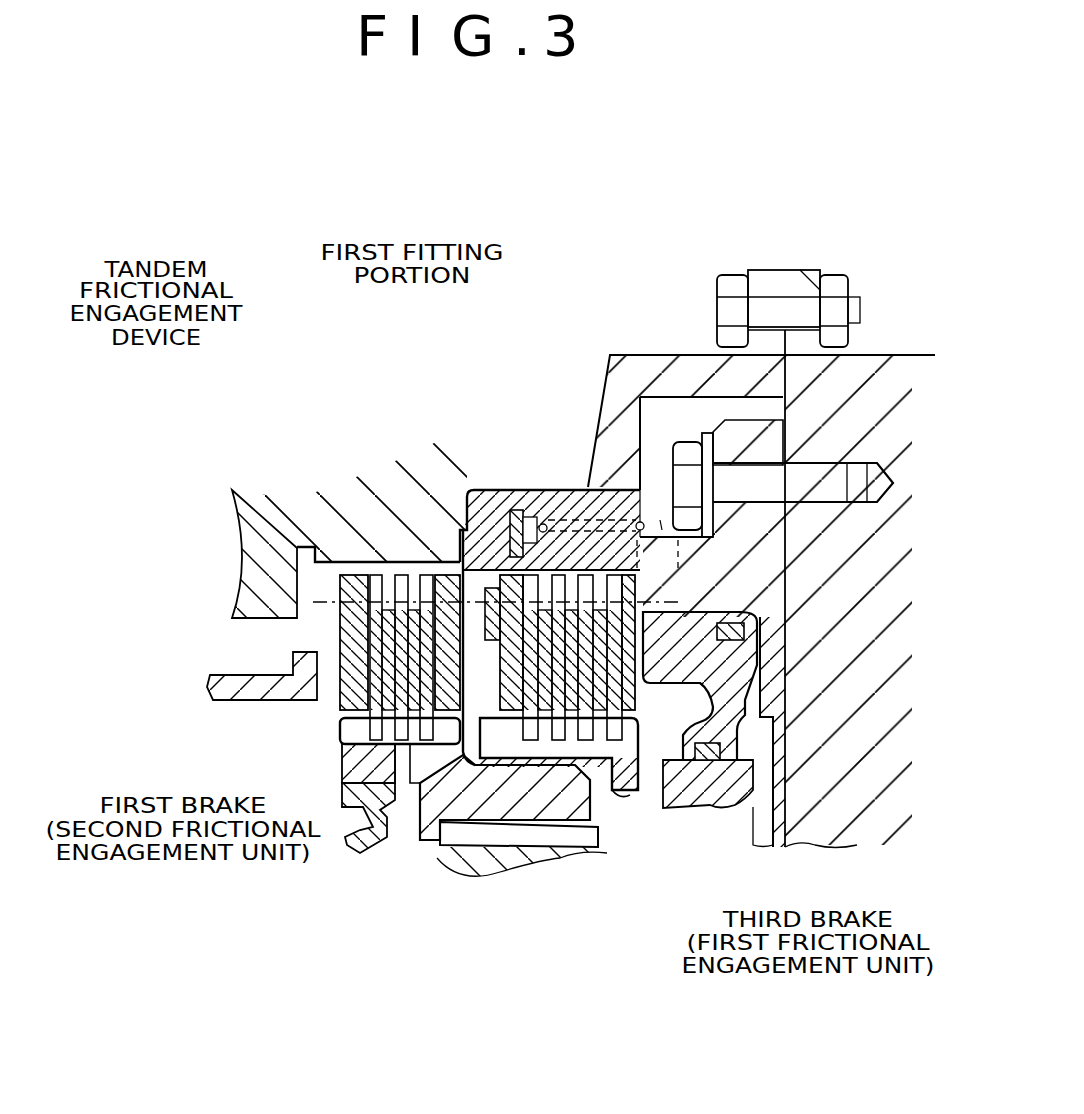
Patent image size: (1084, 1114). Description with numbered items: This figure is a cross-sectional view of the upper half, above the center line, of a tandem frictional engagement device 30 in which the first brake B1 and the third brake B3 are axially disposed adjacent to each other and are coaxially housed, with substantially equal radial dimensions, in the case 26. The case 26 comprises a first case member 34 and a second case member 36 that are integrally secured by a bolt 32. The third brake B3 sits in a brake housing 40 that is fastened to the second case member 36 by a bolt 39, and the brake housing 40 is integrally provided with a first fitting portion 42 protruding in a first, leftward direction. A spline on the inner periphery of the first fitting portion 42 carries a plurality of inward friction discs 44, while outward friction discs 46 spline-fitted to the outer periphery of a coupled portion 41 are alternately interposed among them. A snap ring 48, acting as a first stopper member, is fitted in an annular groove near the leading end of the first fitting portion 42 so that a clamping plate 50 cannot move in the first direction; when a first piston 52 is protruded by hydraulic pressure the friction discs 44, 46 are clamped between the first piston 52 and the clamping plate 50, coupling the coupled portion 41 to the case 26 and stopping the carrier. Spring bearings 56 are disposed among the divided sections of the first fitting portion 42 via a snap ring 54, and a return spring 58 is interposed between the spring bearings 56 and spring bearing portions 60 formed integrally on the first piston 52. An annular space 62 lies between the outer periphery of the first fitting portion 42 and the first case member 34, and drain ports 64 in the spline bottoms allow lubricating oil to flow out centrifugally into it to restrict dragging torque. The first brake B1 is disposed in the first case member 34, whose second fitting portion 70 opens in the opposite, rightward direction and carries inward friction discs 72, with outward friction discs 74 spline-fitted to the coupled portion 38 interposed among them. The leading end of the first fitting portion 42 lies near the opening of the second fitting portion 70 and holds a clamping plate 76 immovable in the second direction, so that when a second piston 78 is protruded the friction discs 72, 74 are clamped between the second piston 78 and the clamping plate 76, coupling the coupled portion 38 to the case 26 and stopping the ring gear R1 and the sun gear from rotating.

The case 26 is at (421, 516).
The tandem frictional engagement device 30 is at (314, 571).
The bolt 32 is at (728, 287).
The first case member 34 is at (265, 568).
The second case member 36 is at (887, 385).
The coupled portion 38 is at (345, 766).
The bolt 39 is at (688, 477).
The brake housing 40 is at (758, 583).
The coupled portion 41 is at (642, 824).
The first fitting portion 42 is at (468, 488).
The inward friction discs 44 is at (603, 772).
The outward friction discs 46 is at (563, 735).
The snap ring 48 is at (437, 585).
The clamping plate 50 is at (513, 695).
The first piston 52 is at (718, 665).
The snap ring 54 is at (497, 547).
The spring bearings 56 is at (517, 510).
The return spring 58 is at (660, 530).
The spring bearing portions 60 is at (664, 527).
The annular space 62 is at (552, 500).
The drain ports 64 is at (600, 543).
The second fitting portion 70 is at (352, 575).
The inward friction discs 72 is at (374, 575).
The outward friction discs 74 is at (420, 746).
The clamping plate 76 is at (386, 578).
The second piston 78 is at (253, 693).
The first brake B1 is at (333, 571).
The third brake B3 is at (552, 648).
The ring gear R1 is at (493, 808).